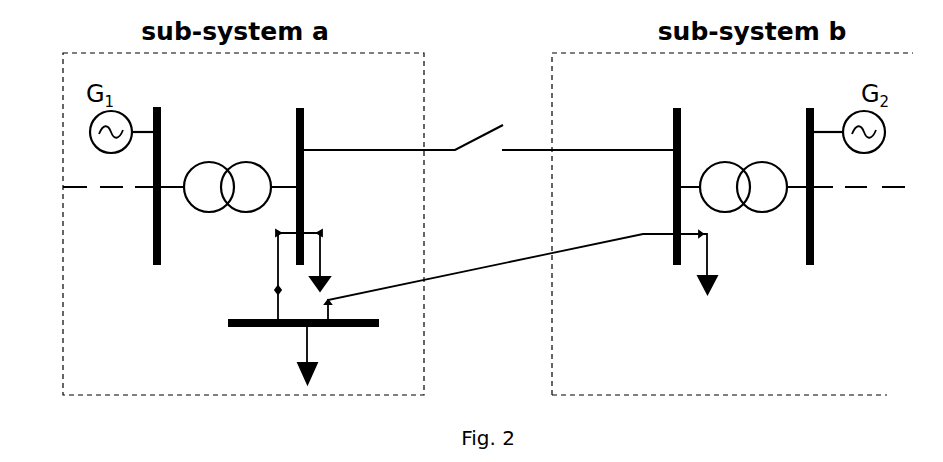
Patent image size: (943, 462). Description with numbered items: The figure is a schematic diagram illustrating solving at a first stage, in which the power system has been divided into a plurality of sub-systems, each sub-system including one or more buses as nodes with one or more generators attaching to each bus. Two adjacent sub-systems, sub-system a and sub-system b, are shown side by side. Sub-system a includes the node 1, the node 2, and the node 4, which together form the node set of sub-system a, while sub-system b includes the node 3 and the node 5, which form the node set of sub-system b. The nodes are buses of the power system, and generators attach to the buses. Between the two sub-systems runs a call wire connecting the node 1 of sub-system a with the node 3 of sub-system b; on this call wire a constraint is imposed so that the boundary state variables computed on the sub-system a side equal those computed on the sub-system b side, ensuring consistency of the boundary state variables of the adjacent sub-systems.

The node 1 is at (315, 324).
The node 2 is at (300, 170).
The node 3 is at (677, 170).
The node 4 is at (157, 170).
The node 5 is at (810, 170).